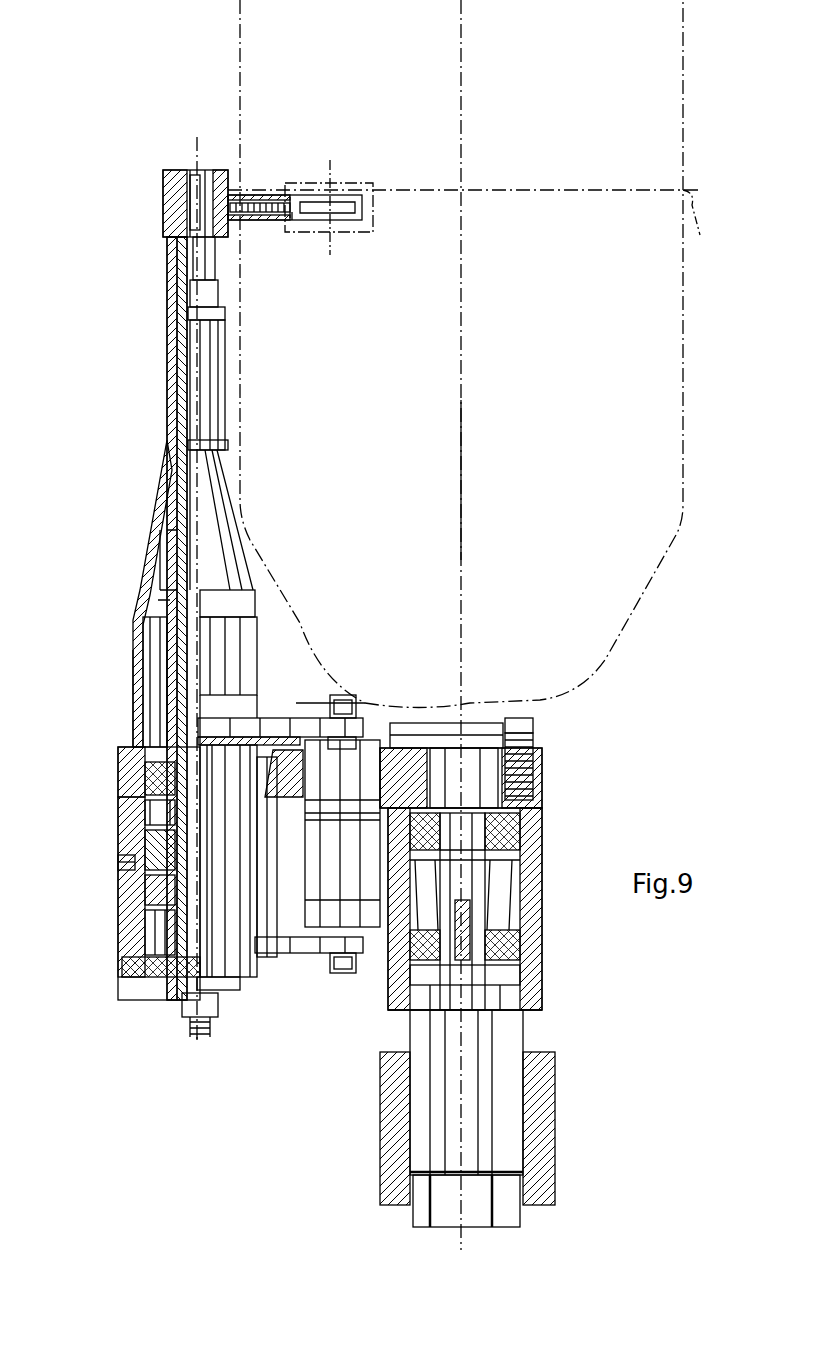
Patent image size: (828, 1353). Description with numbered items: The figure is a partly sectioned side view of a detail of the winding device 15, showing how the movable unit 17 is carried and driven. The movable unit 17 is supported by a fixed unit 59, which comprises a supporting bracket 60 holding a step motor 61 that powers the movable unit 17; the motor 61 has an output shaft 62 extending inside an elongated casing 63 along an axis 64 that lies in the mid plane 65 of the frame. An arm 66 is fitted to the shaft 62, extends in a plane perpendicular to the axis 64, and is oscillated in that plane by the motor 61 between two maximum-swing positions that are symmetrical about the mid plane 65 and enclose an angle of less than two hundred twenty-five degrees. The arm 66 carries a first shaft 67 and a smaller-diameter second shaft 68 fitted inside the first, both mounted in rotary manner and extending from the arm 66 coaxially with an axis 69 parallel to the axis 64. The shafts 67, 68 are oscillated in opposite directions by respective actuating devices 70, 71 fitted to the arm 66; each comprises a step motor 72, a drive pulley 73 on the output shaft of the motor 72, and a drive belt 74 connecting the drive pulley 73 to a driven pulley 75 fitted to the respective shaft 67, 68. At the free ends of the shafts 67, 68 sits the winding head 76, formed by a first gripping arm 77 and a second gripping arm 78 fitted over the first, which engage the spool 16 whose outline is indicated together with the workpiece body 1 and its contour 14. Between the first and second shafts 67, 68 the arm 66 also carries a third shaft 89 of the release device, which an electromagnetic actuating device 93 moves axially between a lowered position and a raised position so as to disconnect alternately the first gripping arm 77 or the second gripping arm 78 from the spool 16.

The workpiece body 1 is at (610, 360).
The workpiece outer contour 14 is at (711, 224).
The winding device 15 is at (265, 1050).
The spool 16 is at (362, 185).
The movable unit 17 is at (148, 398).
The fixed unit 59 is at (560, 968).
The supporting bracket 60 is at (538, 1127).
The step motor 61 is at (485, 1100).
The output shaft 62 is at (490, 875).
The elongated casing 63 is at (540, 925).
The axis 64 is at (543, 770).
The mid plane 65 is at (463, 510).
The arm 66 is at (406, 745).
The first shaft 67 is at (175, 292).
The second shaft 68 is at (200, 172).
The axis 69 is at (194, 150).
The actuating device 70 is at (296, 703).
The actuating device 71 is at (303, 955).
The step motor 72 is at (358, 770).
The drive pulley 73 is at (318, 712).
The drive belt 74 is at (265, 725).
The driven pulley 75 is at (160, 720).
The winding head 76 is at (265, 178).
The first gripping arm 77 is at (292, 222).
The second gripping arm 78 is at (293, 196).
The third shaft 89 is at (177, 255).
The electromagnetic actuating device 93 is at (130, 875).